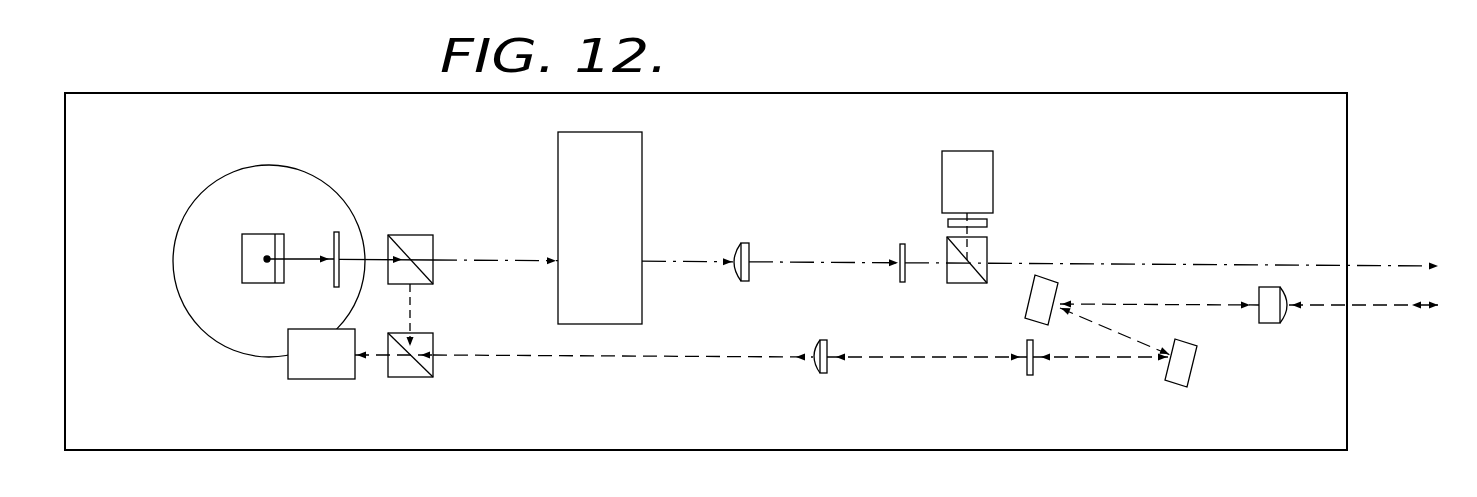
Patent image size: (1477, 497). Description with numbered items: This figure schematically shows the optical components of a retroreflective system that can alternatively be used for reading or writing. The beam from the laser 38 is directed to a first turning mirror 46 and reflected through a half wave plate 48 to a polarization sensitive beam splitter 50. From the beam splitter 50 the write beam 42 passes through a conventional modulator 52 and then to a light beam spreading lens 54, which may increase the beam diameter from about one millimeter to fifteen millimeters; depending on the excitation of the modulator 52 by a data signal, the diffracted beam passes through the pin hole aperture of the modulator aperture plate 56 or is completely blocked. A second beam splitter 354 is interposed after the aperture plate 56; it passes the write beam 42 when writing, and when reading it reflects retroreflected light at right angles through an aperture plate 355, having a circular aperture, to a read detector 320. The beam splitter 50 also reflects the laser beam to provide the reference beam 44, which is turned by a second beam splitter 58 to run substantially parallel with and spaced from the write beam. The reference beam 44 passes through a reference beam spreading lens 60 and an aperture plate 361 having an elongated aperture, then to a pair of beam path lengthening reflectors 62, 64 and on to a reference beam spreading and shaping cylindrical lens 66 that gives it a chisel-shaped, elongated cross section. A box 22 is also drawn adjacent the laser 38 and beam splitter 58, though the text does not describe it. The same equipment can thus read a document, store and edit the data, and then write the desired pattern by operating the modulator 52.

The control unit 22 is at (288, 367).
The laser 38 is at (207, 188).
The write beam 42 is at (506, 257).
The reference beam 44 is at (738, 357).
The first turning mirror 46 is at (266, 283).
The half wave plate 48 is at (336, 232).
The polarization sensitive beam splitter 50 is at (433, 278).
The modulator 52 is at (558, 148).
The light beam spreading lens 54 is at (751, 246).
The modulator aperture plate 56 is at (900, 246).
The second beam splitter 58 is at (420, 377).
The reference beam spreading lens 60 is at (822, 373).
The beam path lengthening reflector 62 is at (1178, 387).
The beam path lengthening reflector 64 is at (1026, 311).
The reference beam spreading and shaping cylindrical lens 66 is at (1268, 323).
The read detector 320 is at (993, 166).
The second beam splitter 354 is at (968, 283).
The aperture plate 355 is at (987, 223).
The aperture plate 361 is at (1030, 375).